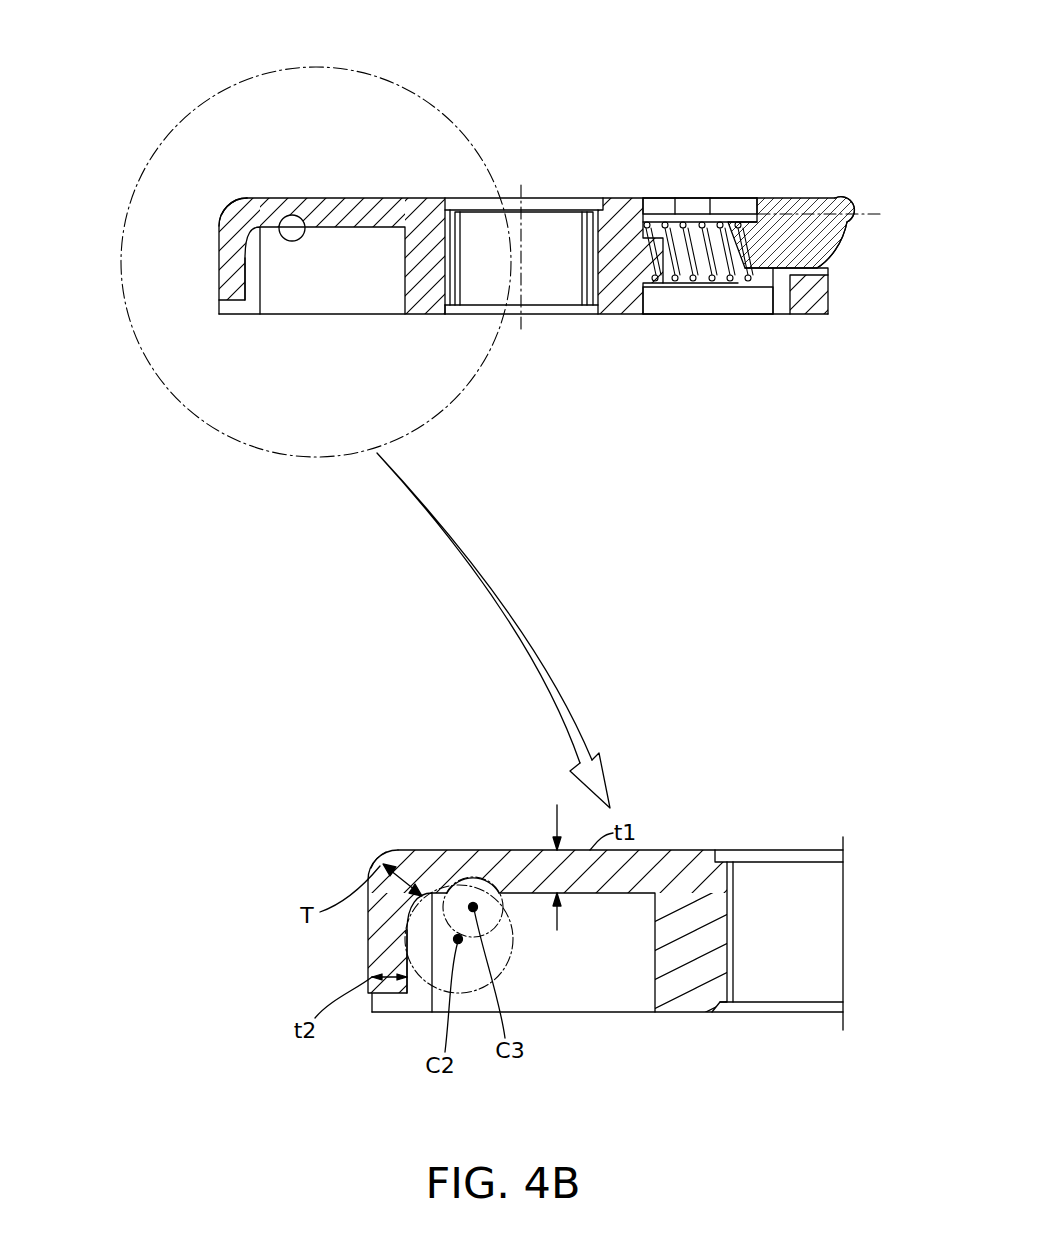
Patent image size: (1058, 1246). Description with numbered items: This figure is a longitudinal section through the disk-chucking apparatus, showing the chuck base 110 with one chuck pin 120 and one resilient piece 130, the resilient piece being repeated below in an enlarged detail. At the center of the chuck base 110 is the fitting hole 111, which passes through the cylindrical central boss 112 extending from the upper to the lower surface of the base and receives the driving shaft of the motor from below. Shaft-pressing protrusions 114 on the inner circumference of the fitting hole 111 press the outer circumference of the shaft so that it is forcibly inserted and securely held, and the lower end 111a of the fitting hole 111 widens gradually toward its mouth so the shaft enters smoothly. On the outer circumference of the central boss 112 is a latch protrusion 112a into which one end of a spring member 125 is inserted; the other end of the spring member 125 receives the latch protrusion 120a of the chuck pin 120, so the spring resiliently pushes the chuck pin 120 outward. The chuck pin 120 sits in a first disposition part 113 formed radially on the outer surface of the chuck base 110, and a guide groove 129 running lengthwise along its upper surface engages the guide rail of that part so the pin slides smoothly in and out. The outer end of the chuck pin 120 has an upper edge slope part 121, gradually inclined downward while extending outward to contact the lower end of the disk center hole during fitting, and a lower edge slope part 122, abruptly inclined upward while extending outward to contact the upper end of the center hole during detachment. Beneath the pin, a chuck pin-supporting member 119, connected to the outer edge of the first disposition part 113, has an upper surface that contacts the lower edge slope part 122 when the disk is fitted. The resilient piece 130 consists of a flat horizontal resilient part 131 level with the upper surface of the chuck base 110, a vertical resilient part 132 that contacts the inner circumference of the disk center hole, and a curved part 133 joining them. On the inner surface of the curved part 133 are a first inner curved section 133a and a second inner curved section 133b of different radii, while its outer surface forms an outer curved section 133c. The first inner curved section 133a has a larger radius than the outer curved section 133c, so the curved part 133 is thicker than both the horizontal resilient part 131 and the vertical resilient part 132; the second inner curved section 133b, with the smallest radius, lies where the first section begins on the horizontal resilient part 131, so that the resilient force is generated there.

The chuck base 110 is at (796, 126).
The fitting hole 111 is at (462, 232).
The lower end 111a is at (447, 310).
The central boss 112 is at (422, 283).
The latch protrusion 112a is at (652, 268).
The first disposition part 113 is at (662, 205).
The shaft-pressing protrusion 114 is at (577, 243).
The chuck pin-supporting member 119 is at (818, 313).
The chuck pin 120 is at (855, 225).
The latch protrusion 120a is at (742, 265).
The upper edge slope part 121 is at (830, 205).
The lower edge slope part 122 is at (833, 247).
The spring member 125 is at (705, 240).
The guide groove 129 is at (788, 200).
The resilient piece 130 is at (178, 236).
The horizontal resilient part 131 is at (260, 227).
The vertical resilient part 132 is at (222, 288).
The curved part 133 is at (222, 212).
The first inner curved section 133a is at (222, 257).
The second inner curved section 133b is at (300, 226).
The outer curved section 133c is at (232, 203).